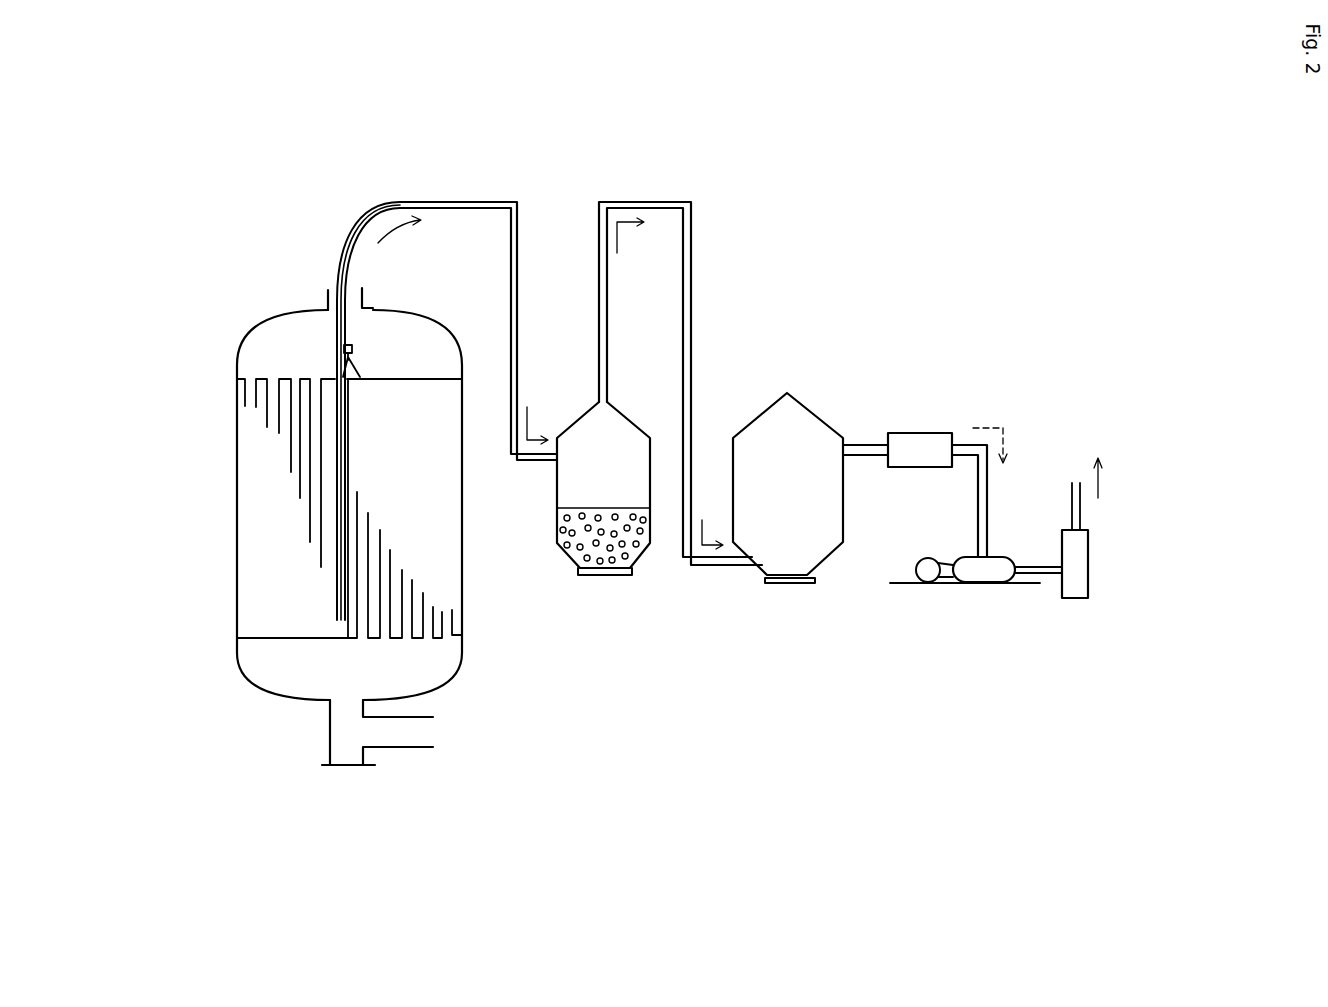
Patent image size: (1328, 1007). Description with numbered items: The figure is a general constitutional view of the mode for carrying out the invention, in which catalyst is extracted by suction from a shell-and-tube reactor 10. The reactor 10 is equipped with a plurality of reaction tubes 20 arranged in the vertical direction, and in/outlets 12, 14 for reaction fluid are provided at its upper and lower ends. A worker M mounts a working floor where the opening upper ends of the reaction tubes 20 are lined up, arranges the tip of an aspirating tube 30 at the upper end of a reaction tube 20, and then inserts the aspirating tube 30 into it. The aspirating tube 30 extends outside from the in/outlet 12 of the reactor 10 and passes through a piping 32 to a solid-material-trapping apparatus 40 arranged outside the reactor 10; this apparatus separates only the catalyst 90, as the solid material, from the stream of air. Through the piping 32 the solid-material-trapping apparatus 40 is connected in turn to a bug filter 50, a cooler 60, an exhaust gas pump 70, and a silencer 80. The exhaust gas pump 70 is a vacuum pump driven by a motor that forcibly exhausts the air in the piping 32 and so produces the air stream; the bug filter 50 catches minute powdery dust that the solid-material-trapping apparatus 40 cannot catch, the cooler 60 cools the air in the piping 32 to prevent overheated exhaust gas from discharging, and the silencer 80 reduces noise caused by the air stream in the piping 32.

The shell-and-tube reactor 10 is at (237, 442).
The in/outlet 12 is at (328, 293).
The in/outlet 14 is at (408, 748).
The reaction tubes 20 is at (335, 385).
The aspirating tube 30 is at (340, 447).
The piping 32 is at (483, 200).
The worker M is at (355, 360).
The solid-material-trapping apparatus 40 is at (627, 472).
The catalyst 90 is at (587, 545).
The bug filter 50 is at (810, 503).
The cooler 60 is at (920, 433).
The exhaust gas pump 70 is at (983, 575).
The silencer 80 is at (1090, 563).